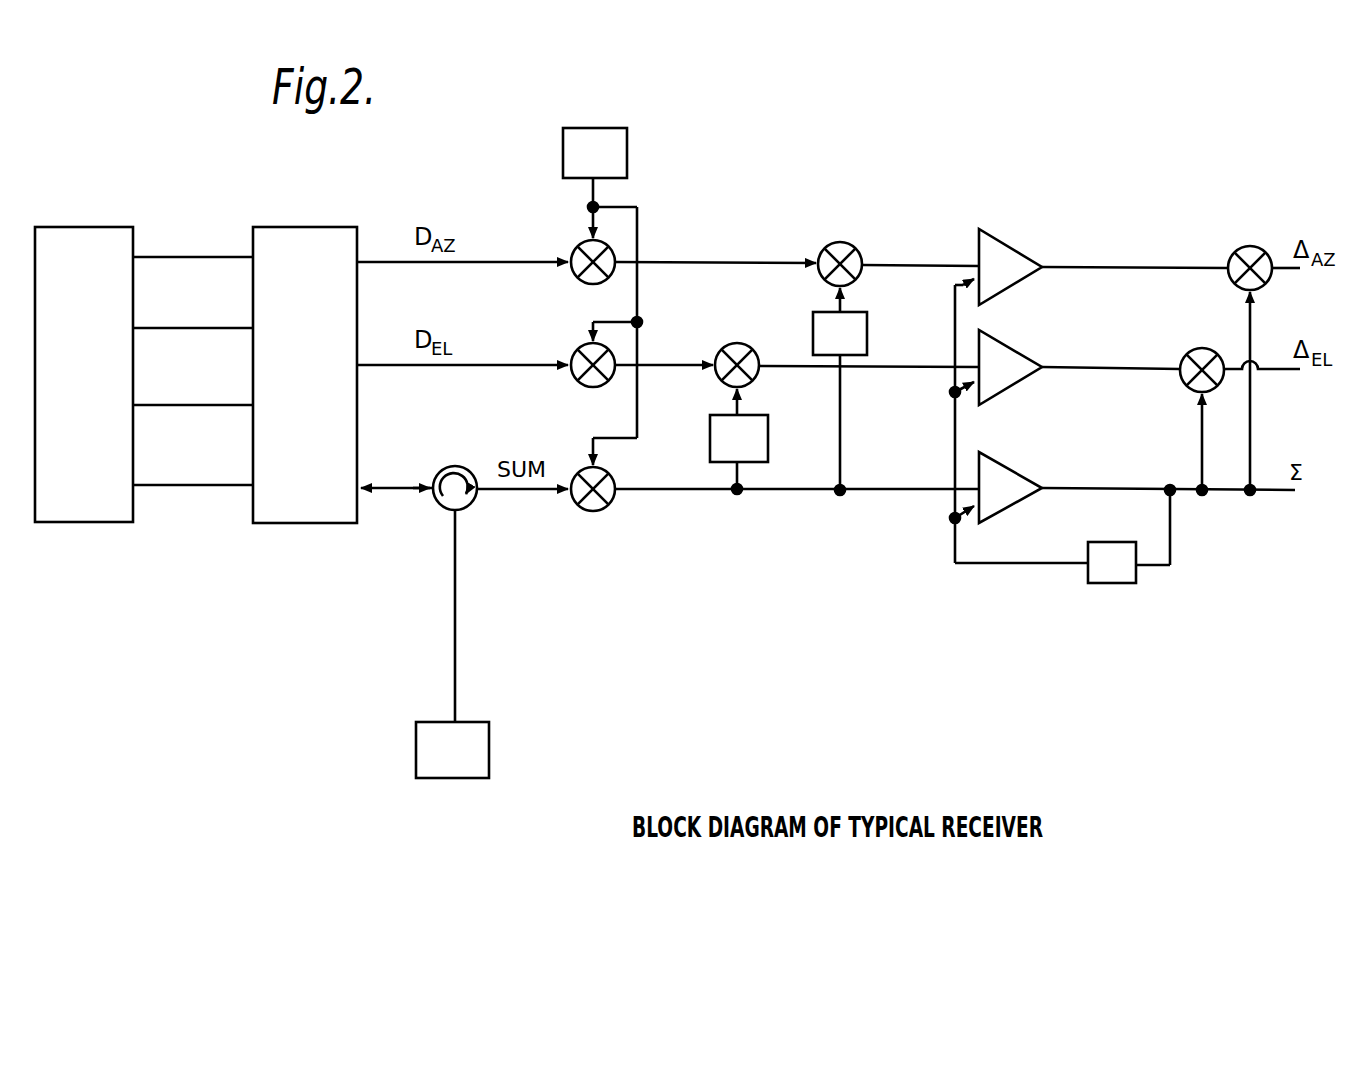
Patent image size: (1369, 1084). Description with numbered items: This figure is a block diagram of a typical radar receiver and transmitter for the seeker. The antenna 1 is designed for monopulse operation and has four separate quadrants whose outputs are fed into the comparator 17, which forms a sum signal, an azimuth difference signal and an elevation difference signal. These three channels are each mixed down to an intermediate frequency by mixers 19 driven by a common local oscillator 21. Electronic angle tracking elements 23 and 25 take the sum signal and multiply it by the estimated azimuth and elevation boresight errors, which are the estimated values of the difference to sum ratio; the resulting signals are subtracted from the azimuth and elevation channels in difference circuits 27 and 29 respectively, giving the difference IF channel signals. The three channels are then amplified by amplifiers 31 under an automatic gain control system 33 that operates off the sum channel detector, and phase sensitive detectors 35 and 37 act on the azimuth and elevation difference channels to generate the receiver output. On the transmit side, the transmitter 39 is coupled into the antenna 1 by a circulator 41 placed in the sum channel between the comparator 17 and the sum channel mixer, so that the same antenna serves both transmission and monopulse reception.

The antenna 1 is at (115, 227).
The comparator 17 is at (340, 227).
The mixers 19 is at (578, 279).
The local oscillator 21 is at (627, 170).
The electronic angle tracking element 23 is at (867, 332).
The electronic angle tracking element 25 is at (768, 438).
The difference circuit 27 is at (848, 243).
The difference circuit 29 is at (757, 328).
The amplifiers 31 is at (1003, 243).
The automatic gain control system 33 is at (1023, 609).
The phase sensitive detector 35 is at (1250, 246).
The phase sensitive detector 37 is at (1198, 348).
The transmitter 39 is at (489, 748).
The circulator 41 is at (468, 507).